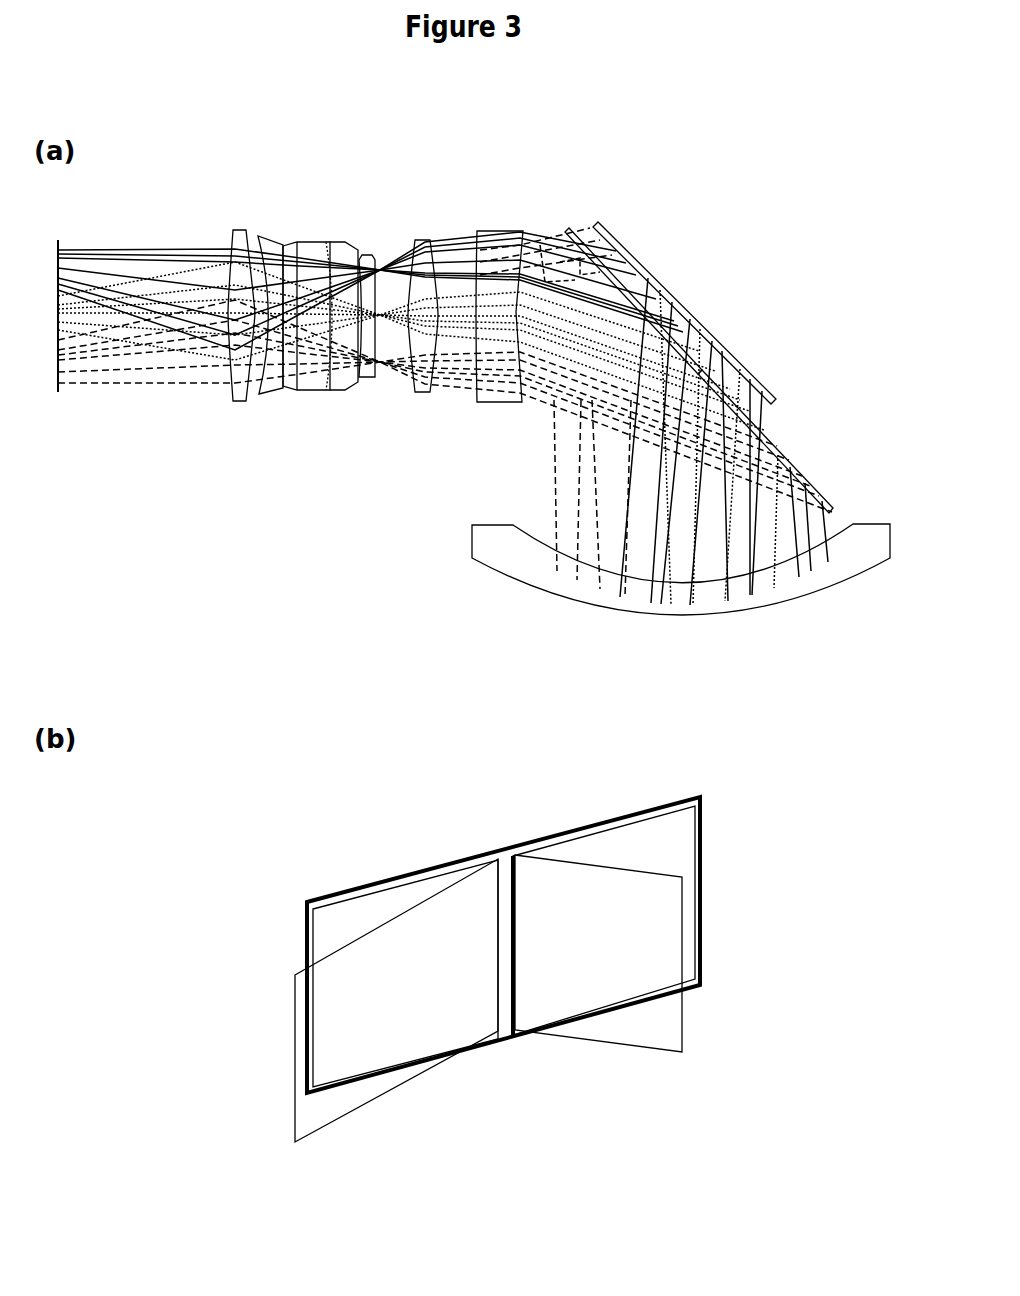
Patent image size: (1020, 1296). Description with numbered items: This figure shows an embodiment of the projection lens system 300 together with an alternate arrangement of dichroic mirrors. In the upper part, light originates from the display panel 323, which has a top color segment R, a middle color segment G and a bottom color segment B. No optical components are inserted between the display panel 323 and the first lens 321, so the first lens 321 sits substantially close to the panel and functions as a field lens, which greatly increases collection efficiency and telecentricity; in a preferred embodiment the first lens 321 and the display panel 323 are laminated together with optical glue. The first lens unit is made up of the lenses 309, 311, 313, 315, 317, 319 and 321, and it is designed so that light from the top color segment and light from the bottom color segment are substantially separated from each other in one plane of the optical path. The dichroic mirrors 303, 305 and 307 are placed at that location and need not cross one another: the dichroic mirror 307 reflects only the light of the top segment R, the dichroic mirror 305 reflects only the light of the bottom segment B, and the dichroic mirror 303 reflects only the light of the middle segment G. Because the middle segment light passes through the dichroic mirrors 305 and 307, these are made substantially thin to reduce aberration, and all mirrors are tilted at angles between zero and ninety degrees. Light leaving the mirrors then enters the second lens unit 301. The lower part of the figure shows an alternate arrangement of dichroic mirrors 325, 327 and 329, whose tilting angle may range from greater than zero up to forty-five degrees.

The projection lens system 300 is at (213, 516).
The second lens unit 301 is at (462, 541).
The dichroic mirror 303 is at (680, 300).
The dichroic mirror 305 is at (578, 228).
The dichroic mirror 307 is at (792, 448).
The lens 309 is at (498, 229).
The lens 311 is at (420, 238).
The lens 313 is at (368, 253).
The lens 315 is at (342, 240).
The lens 317 is at (312, 240).
The lens 319 is at (280, 232).
The first lens 321 is at (238, 228).
The display panel 323 is at (58, 238).
The dichroic mirror 325 is at (315, 1116).
The dichroic mirror 327 is at (663, 1032).
The dichroic mirror 329 is at (680, 824).